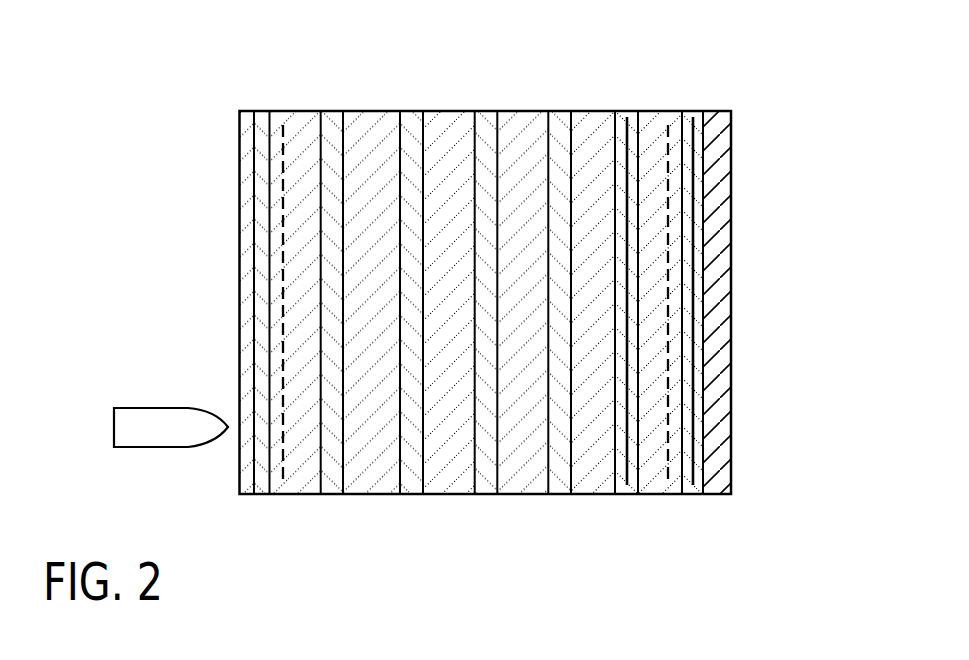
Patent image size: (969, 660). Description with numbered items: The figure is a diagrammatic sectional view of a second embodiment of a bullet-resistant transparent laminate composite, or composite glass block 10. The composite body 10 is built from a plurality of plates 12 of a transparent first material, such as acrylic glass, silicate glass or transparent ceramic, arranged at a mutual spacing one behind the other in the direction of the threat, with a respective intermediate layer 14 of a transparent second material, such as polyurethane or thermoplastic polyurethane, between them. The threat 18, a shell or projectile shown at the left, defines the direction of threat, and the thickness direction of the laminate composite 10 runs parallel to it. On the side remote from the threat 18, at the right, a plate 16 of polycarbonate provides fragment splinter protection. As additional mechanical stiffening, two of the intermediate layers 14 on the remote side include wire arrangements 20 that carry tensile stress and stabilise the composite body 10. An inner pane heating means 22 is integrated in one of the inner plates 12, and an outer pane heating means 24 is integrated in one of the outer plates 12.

The composite glass block 10 is at (802, 239).
The plates 12 is at (250, 111).
The intermediate layer 14 is at (338, 495).
The plate of polycarbonate 16 is at (721, 111).
The threat 18 is at (158, 413).
The wire arrangements 20 is at (697, 382).
The inner pane heating means 22 is at (670, 444).
The outer pane heating means 24 is at (283, 313).